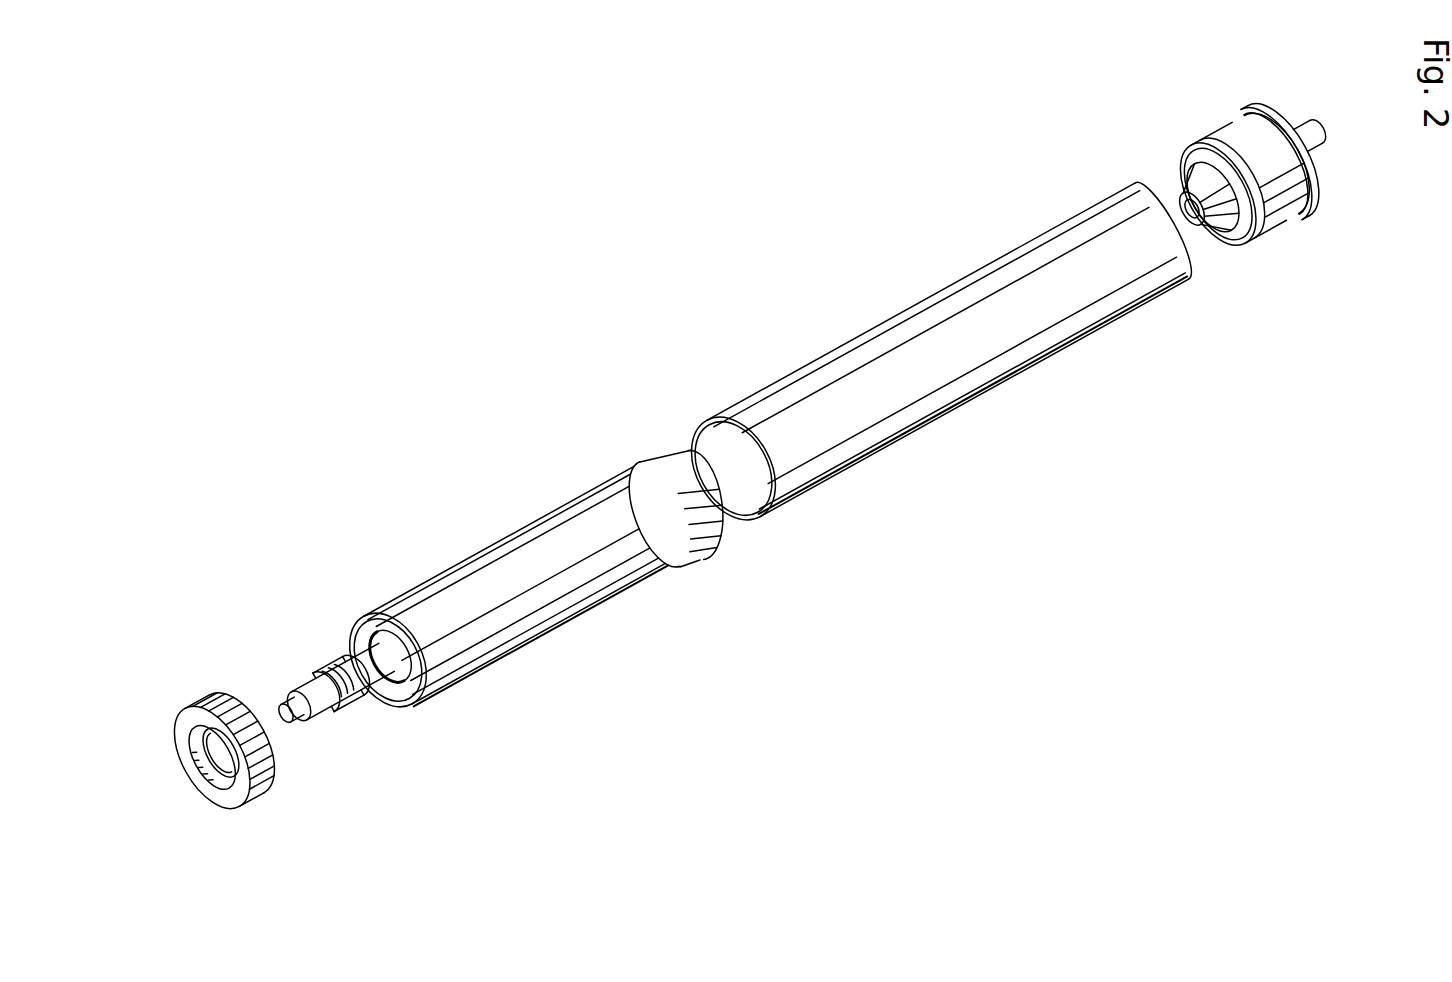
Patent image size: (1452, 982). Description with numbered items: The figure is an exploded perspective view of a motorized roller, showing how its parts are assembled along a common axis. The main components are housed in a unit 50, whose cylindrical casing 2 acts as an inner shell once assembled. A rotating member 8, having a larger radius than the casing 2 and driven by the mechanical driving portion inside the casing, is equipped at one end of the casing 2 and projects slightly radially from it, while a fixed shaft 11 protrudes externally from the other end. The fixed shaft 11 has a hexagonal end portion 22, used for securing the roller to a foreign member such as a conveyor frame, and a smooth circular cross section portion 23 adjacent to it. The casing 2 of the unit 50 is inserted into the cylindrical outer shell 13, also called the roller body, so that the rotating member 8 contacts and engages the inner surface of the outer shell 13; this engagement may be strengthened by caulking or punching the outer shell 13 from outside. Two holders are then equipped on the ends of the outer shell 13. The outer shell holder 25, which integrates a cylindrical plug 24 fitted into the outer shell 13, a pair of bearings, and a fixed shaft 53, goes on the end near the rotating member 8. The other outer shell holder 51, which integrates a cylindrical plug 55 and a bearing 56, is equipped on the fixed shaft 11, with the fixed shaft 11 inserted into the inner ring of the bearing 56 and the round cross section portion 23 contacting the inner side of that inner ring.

The cylindrical casing 2 is at (509, 614).
The rotating member 8 is at (670, 452).
The fixed shaft 11 is at (333, 724).
The cylindrical outer shell 13 is at (929, 300).
The hexagonal cross section end portion 22 is at (343, 688).
The circular cross section portion 23 is at (407, 693).
The cylindrical plug 24 is at (1283, 210).
The outer shell holder 25 is at (1261, 213).
The unit 50 is at (531, 569).
The outer shell holder 51 is at (205, 747).
The fixed shaft 53 is at (1322, 135).
The cylindrical plug 55 is at (246, 792).
The bearing 56 is at (197, 745).